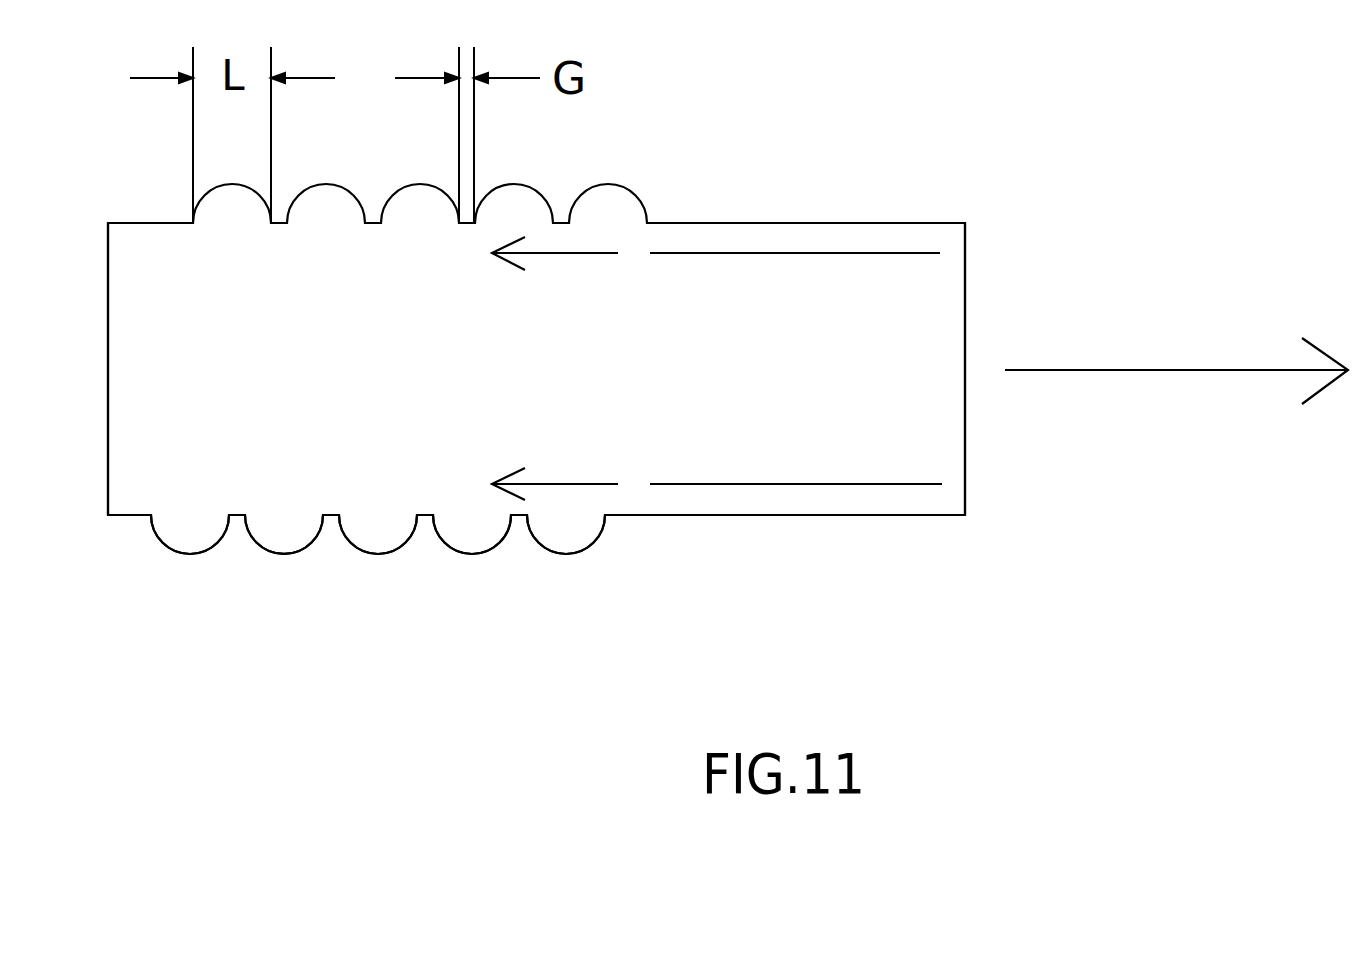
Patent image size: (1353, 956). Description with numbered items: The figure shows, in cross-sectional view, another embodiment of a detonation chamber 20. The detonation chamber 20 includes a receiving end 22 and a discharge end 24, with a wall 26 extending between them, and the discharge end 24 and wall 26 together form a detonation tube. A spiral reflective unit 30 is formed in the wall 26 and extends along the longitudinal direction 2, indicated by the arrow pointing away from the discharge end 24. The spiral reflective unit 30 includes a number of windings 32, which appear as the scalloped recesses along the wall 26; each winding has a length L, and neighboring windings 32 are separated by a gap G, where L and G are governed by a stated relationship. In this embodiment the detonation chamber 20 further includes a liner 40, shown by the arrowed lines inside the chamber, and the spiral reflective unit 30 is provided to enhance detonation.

The detonation chamber 20 is at (1327, 205).
The receiving end 22 is at (108, 472).
The discharge end 24 is at (965, 475).
The wall 26 is at (795, 515).
The spiral reflective unit 30 is at (470, 650).
The windings 32 is at (183, 535).
The liner 40 is at (922, 255).
The longitudinal direction 2 is at (1176, 373).